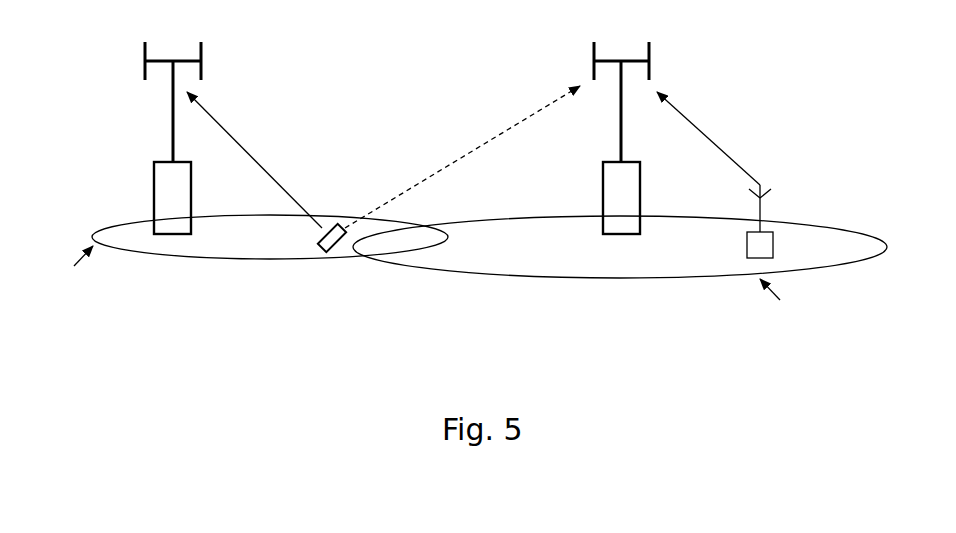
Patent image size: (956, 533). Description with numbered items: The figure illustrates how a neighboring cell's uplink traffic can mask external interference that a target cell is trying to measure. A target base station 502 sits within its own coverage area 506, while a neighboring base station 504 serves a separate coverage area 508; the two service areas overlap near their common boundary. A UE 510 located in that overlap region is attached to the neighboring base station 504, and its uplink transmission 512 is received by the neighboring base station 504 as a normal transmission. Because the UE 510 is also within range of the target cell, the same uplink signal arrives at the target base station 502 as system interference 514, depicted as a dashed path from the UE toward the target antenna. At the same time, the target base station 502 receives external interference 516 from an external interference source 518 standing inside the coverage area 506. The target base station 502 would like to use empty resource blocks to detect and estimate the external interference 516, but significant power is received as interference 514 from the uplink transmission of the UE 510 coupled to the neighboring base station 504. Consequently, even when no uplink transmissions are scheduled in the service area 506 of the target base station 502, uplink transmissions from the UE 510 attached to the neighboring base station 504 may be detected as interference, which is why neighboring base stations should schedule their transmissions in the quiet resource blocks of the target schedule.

The target base station 502 is at (602, 200).
The neighboring base station 504 is at (154, 192).
The coverage area 506 is at (572, 282).
The coverage area 508 is at (272, 258).
The UE 510 is at (335, 250).
The uplink transmission 512 is at (263, 169).
The system interference 514 is at (508, 127).
The external interference 516 is at (717, 153).
The external interference source 518 is at (746, 244).